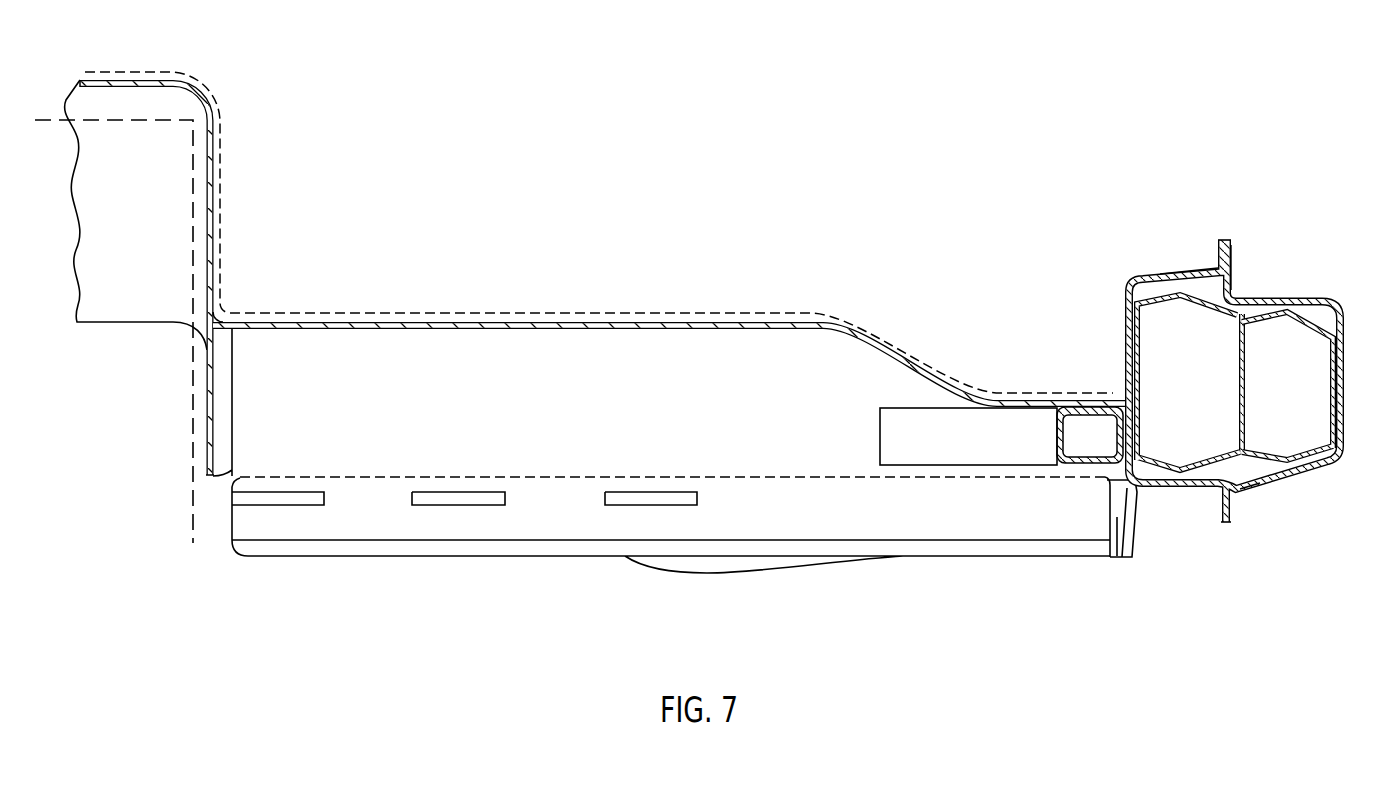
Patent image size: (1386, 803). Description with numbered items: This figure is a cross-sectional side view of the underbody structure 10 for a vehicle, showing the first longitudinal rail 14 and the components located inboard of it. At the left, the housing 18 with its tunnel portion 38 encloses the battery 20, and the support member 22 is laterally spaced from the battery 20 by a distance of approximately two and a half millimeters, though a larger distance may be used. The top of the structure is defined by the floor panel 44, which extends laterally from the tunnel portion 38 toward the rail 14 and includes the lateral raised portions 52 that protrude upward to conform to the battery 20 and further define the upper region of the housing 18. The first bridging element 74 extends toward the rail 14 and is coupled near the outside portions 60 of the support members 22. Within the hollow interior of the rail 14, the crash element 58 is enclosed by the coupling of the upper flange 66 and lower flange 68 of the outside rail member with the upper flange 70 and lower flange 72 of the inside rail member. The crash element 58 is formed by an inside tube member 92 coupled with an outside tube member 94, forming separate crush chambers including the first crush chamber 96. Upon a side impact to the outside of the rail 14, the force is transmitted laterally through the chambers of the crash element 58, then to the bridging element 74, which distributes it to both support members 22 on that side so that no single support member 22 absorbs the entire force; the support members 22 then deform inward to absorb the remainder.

The underbody structure 10 is at (1228, 114).
The first longitudinal rail 14 is at (1234, 372).
The housing 18 is at (603, 271).
The tunnel portion 38 is at (603, 271).
The battery 20 is at (121, 106).
The first pair of support members 22 is at (438, 547).
The floor panel 44 is at (537, 292).
The lateral raised portions 52 is at (658, 322).
The crash element 58 is at (1207, 270).
The outside portions 60 is at (1103, 553).
The upper flange 66 is at (1233, 262).
The lower flange 68 is at (1232, 503).
The upper flange 70 is at (1218, 238).
The lower flange 72 is at (1217, 513).
The first bridging element 74 is at (1022, 445).
The inside tube member 92 is at (1153, 297).
The outside tube member 94 is at (1308, 325).
The first crush chamber 96 is at (1191, 400).